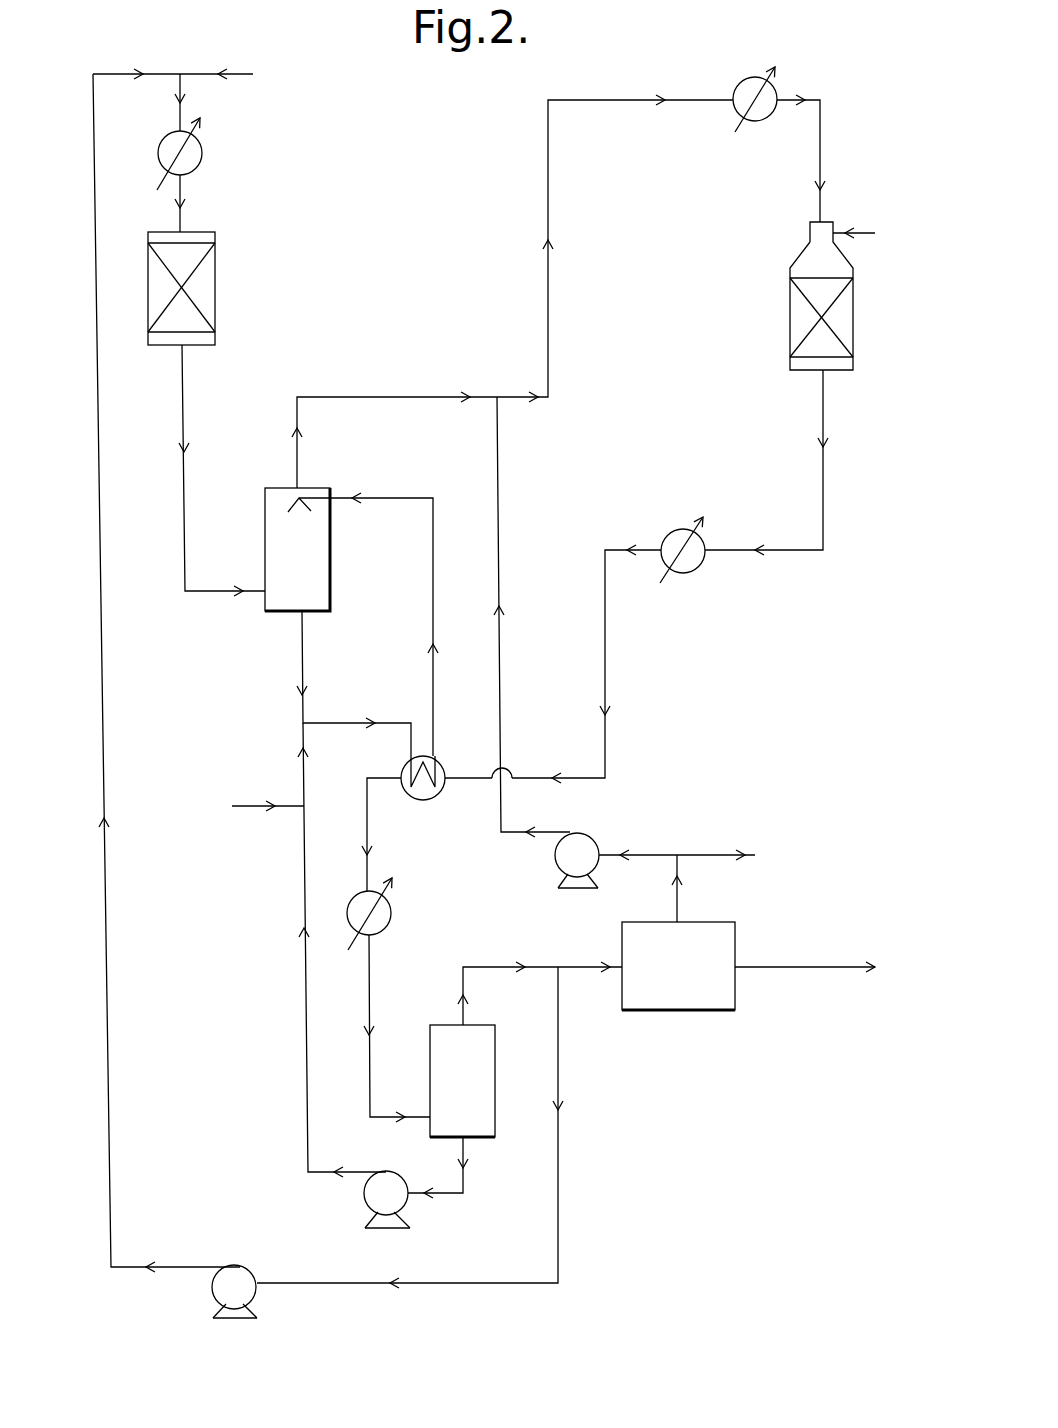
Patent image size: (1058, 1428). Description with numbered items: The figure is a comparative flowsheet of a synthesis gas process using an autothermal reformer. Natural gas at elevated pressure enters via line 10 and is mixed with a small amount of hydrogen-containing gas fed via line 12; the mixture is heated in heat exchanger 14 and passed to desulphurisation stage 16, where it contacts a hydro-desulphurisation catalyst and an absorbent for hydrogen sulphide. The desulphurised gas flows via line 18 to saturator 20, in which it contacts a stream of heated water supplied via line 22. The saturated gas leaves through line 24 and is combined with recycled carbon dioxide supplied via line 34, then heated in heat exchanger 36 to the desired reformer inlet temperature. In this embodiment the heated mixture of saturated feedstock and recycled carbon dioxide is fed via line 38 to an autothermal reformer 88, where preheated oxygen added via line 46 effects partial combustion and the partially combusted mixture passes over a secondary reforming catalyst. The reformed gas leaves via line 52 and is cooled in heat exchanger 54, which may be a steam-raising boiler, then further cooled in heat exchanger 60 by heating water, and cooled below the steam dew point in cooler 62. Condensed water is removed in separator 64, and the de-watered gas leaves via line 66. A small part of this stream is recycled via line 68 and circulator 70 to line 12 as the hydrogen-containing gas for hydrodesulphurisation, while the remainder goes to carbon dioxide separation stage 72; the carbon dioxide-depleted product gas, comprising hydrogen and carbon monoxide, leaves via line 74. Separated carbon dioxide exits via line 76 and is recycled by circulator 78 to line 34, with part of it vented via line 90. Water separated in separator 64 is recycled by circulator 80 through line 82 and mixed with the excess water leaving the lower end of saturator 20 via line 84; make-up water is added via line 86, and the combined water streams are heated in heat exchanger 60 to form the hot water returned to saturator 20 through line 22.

The line 10 is at (253, 76).
The line 12 is at (95, 186).
The heat exchanger 14 is at (203, 156).
The desulphurisation stage 16 is at (215, 333).
The line 18 is at (185, 530).
The saturator 20 is at (265, 568).
The line 22 is at (392, 496).
The line 24 is at (298, 402).
The line 34 is at (499, 440).
The heat exchanger 36 is at (733, 112).
The line 38 is at (820, 200).
The line 46 is at (862, 232).
The autothermal reformer 88 is at (790, 325).
The line 52 is at (822, 462).
The heat exchanger 54 is at (700, 572).
The heat exchanger 60 is at (422, 801).
The cooler 62 is at (391, 913).
The separator 64 is at (496, 1097).
The line 66 is at (490, 965).
The line 68 is at (562, 1178).
The circulator 70 is at (242, 1265).
The carbon dioxide separation stage 72 is at (685, 1012).
The line 74 is at (800, 965).
The line 76 is at (678, 905).
The circulator 78 is at (555, 862).
The circulator 80 is at (383, 1230).
The line 82 is at (306, 1085).
The line 84 is at (302, 660).
The line 86 is at (252, 804).
The line 90 is at (722, 852).